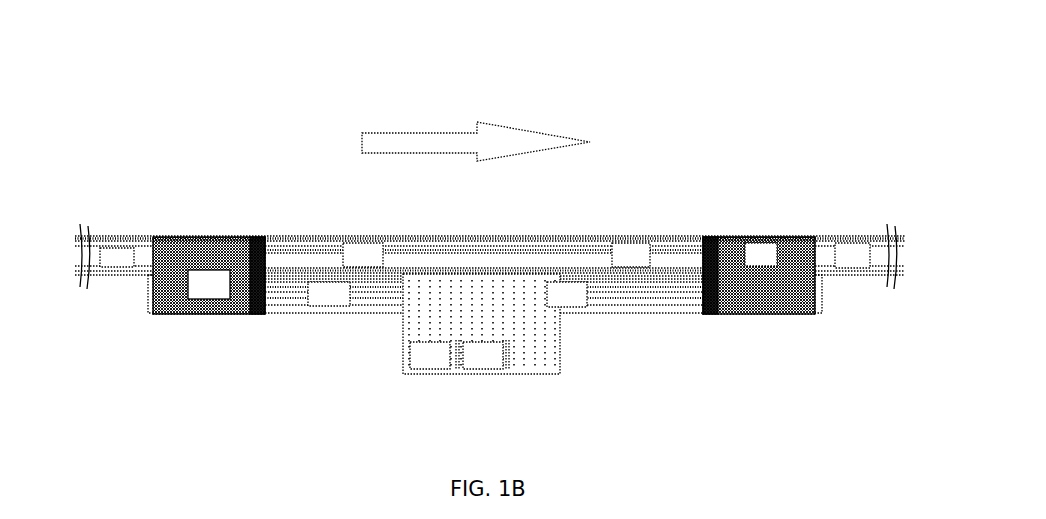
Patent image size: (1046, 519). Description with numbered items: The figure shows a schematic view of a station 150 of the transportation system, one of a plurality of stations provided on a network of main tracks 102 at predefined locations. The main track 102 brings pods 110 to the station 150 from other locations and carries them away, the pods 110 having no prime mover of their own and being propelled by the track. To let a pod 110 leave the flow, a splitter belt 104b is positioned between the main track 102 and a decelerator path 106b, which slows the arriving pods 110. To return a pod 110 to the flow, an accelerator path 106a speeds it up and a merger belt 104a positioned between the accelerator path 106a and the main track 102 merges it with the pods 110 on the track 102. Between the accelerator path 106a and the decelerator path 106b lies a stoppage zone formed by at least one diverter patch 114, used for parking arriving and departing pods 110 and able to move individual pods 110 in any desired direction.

The station 150 is at (198, 128).
The main track 102 is at (126, 236).
The merger belt 104a is at (768, 236).
The splitter belt 104b is at (213, 236).
The accelerator path 106a is at (676, 316).
The decelerator path 106b is at (298, 316).
The pod 110 is at (124, 255).
The diverter patch 114 is at (405, 344).